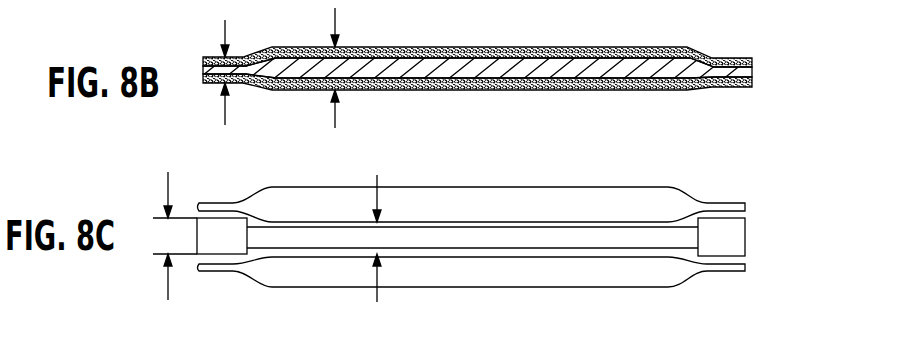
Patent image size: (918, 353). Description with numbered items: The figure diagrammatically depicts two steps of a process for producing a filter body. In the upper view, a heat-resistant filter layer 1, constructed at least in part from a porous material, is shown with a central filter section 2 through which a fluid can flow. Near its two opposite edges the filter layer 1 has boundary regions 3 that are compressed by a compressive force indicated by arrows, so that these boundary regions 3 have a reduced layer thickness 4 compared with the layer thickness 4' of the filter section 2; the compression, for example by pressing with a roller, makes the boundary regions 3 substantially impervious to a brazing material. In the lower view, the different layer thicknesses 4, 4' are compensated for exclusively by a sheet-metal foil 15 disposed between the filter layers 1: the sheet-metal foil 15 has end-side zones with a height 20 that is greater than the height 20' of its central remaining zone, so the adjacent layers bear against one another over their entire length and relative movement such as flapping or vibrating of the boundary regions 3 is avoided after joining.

In FIG. 8C, the filter layer 1 is at (657, 205).
In FIG. 8B, the filter section 2 is at (518, 92).
In FIG. 8B, the boundary region 3 is at (739, 88).
In FIG. 8B, the layer thickness 4 is at (243, 86).
In FIG. 8B, the layer thickness 4' is at (352, 80).
In FIG. 8C, the sheet-metal foil 15 is at (735, 242).
In FIG. 8C, the height 20 is at (177, 241).
In FIG. 8C, the height 20' is at (472, 257).